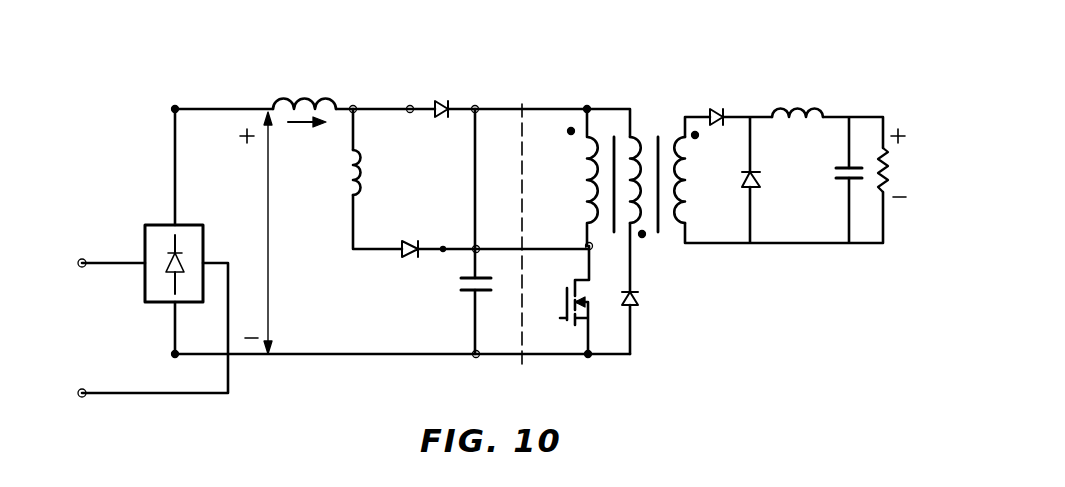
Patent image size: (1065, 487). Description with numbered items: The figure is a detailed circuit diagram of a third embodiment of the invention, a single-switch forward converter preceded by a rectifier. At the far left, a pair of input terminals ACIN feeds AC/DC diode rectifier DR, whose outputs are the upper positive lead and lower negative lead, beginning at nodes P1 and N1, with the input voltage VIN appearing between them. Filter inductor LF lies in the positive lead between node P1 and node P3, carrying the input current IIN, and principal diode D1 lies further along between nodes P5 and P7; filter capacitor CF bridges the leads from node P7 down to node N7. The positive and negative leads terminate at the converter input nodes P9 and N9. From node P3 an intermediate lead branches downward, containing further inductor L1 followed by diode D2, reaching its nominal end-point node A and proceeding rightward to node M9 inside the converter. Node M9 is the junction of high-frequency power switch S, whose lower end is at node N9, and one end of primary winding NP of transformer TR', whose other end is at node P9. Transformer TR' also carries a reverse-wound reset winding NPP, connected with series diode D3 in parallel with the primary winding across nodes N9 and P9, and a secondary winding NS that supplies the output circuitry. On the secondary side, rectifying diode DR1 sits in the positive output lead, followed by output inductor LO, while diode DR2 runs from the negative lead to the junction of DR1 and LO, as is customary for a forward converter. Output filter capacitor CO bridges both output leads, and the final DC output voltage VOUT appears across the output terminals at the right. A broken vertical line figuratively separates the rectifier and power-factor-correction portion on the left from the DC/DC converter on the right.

The positive rectifier output node P1 is at (172, 109).
The positive lead node P3 is at (354, 106).
The positive lead node P5 is at (410, 106).
The positive lead node P7 is at (475, 106).
The positive converter input node P9 is at (587, 107).
The negative rectifier output node N1 is at (174, 356).
The negative lead node N7 is at (476, 356).
The negative converter input node N9 is at (588, 356).
The intermediate node M9 is at (588, 245).
The intermediate lead node A is at (444, 248).
The AC/DC diode rectifier DR is at (140, 295).
The AC input terminals ACIN is at (73, 332).
The filter inductor LF is at (304, 88).
The input current IIN is at (307, 140).
The input voltage VIN is at (265, 233).
The further inductor L1 is at (374, 172).
The principal diode D1 is at (446, 93).
The diode D2 is at (416, 234).
The series diode D3 is at (648, 308).
The filter capacitor CF is at (463, 290).
The high-frequency power switch S is at (567, 304).
The transformer TR' is at (645, 159).
The primary winding NP is at (572, 177).
The reset winding NPP is at (644, 236).
The secondary winding NS is at (694, 178).
The rectifying diode DR1 is at (723, 101).
The diode DR2 is at (763, 180).
The output inductor LO is at (797, 97).
The output filter capacitor CO is at (843, 180).
The DC output voltage VOUT is at (907, 163).